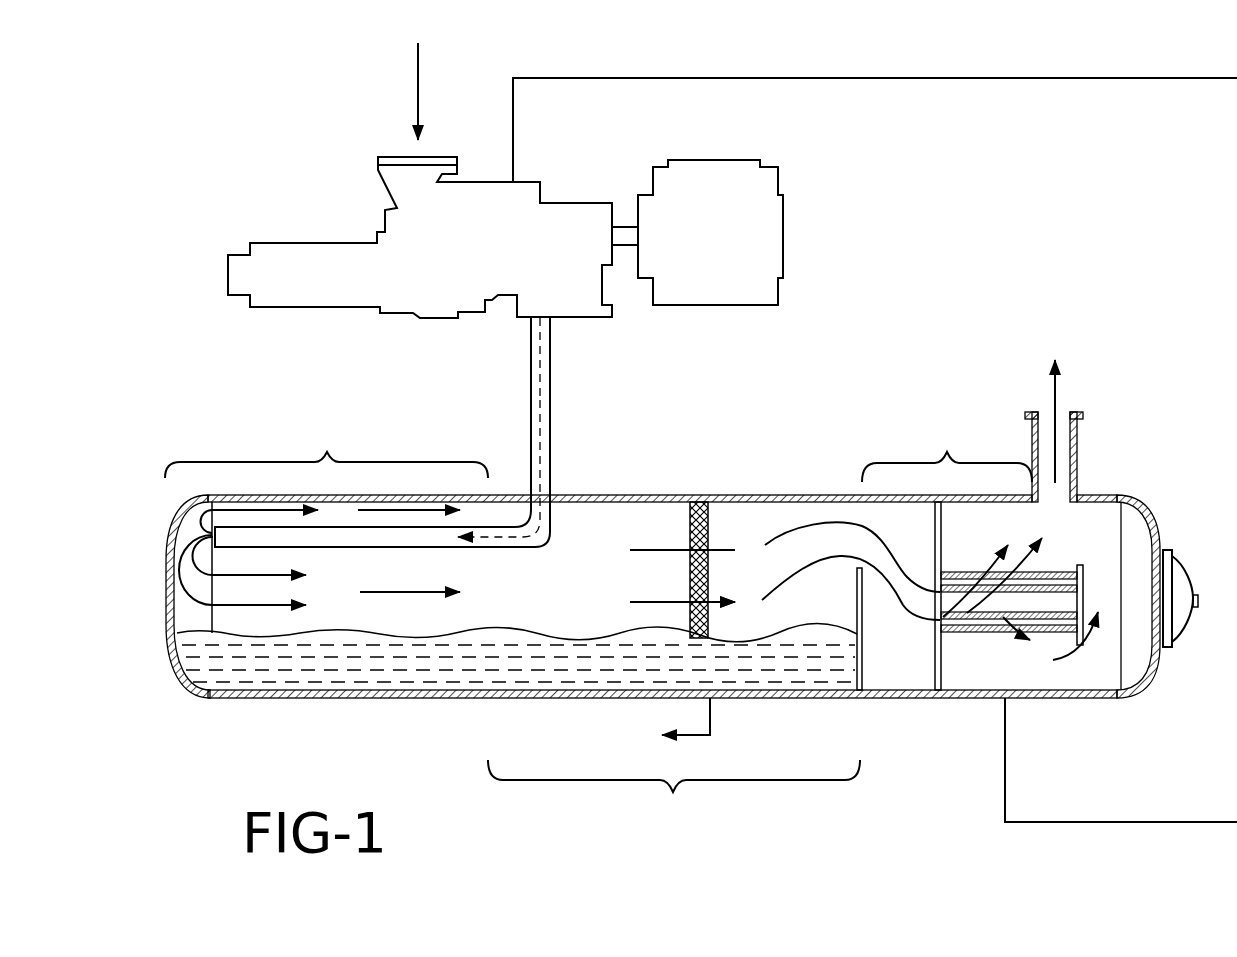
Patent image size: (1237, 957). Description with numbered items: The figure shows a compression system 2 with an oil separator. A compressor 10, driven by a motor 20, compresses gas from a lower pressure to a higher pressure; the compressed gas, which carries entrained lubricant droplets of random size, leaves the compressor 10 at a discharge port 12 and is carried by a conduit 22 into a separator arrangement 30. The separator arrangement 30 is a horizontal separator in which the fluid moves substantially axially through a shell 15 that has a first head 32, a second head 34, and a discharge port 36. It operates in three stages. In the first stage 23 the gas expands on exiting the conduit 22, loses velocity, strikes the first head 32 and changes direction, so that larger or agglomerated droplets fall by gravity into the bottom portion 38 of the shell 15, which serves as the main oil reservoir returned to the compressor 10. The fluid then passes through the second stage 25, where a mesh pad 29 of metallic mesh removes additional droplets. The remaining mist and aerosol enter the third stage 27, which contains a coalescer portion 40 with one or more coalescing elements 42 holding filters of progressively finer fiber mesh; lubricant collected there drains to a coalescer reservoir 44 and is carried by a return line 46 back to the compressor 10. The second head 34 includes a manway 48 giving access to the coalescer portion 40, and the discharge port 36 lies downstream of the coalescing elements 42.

The compression system 2 is at (178, 192).
The compressor 10 is at (402, 228).
The discharge port 12 is at (550, 328).
The shell 15 is at (793, 497).
The motor 20 is at (742, 195).
The conduit 22 is at (553, 447).
The first stage 23 is at (326, 522).
The second stage 25 is at (521, 738).
The third stage 27 is at (897, 552).
The mesh pad 29 is at (710, 528).
The separator arrangement 30 is at (367, 700).
The first head 32 is at (165, 595).
The second head 34 is at (1150, 673).
The discharge port 36 is at (1073, 412).
The bottom portion 38 is at (288, 663).
The coalescer portion 40 is at (968, 700).
The coalescing element 42 is at (1058, 572).
The coalescer reservoir 44 is at (1053, 678).
The return line 46 is at (1067, 823).
The manway 48 is at (1180, 570).